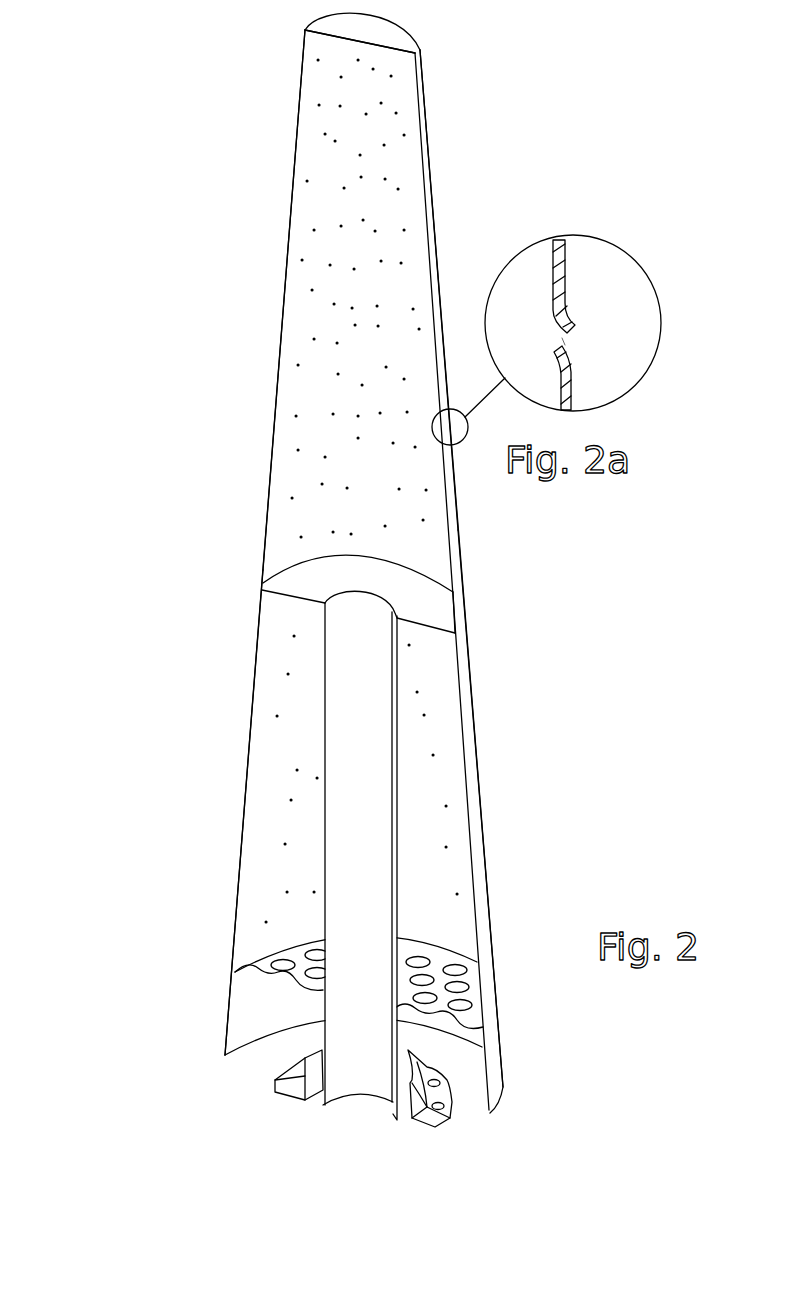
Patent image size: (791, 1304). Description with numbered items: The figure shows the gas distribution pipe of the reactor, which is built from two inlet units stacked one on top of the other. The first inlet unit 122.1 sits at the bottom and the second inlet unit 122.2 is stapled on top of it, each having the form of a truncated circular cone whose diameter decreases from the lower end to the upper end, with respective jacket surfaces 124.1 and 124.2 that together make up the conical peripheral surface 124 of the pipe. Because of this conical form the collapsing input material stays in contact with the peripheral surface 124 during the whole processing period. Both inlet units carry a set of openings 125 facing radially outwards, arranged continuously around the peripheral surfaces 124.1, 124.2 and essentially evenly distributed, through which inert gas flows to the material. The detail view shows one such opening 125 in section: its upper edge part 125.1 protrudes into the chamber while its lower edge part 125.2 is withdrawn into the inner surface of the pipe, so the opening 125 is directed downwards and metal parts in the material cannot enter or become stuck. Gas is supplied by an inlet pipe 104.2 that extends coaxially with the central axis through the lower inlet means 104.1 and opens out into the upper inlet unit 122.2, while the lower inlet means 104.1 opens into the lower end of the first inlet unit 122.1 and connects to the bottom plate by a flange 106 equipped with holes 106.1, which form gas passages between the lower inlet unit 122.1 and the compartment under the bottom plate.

In FIG. 2, the lower inlet means 104.1 is at (310, 1072).
In FIG. 2, the inlet pipe 104.2 is at (360, 652).
In FIG. 2, the flange 106 is at (440, 1095).
In FIG. 2, the holes 106.1 is at (442, 1105).
In FIG. 2, the first inlet unit 122.1 is at (247, 746).
In FIG. 2, the second inlet unit 122.2 is at (280, 259).
In FIG. 2, the peripheral surface 124 is at (250, 470).
In FIG. 2, the peripheral surface of the first inlet unit 124.1 is at (243, 833).
In FIG. 2, the peripheral surface of the second inlet unit 124.2 is at (280, 357).
In FIG. 2, the openings 125 is at (323, 188).
In FIG. 2A, the openings 125 is at (575, 347).
In FIG. 2A, the upper edge part 125.1 is at (573, 305).
In FIG. 2A, the lower edge part 125.2 is at (580, 378).